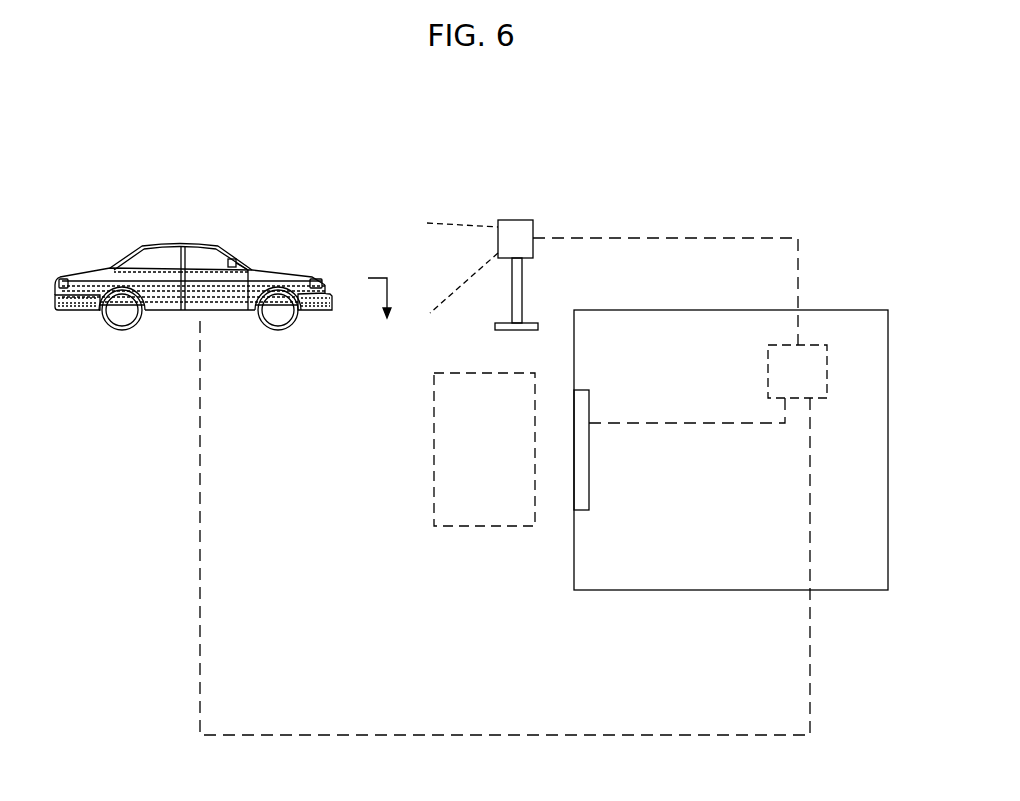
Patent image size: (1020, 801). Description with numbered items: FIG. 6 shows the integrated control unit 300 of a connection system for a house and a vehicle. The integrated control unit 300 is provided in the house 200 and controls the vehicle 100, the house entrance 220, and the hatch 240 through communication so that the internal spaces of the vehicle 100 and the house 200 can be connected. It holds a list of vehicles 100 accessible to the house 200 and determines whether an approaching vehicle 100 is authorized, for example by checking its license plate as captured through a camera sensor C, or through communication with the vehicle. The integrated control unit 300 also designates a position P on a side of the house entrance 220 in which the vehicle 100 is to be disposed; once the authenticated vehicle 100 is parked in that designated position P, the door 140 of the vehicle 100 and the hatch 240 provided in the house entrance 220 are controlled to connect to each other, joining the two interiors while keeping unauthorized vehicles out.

The vehicle 100 is at (193, 242).
The door 140 is at (190, 243).
The camera sensor C is at (515, 224).
The house 200 is at (855, 594).
The integrated control unit 300 is at (815, 345).
The house entrance 220 is at (622, 521).
The hatch 240 is at (597, 482).
The position P is at (478, 527).